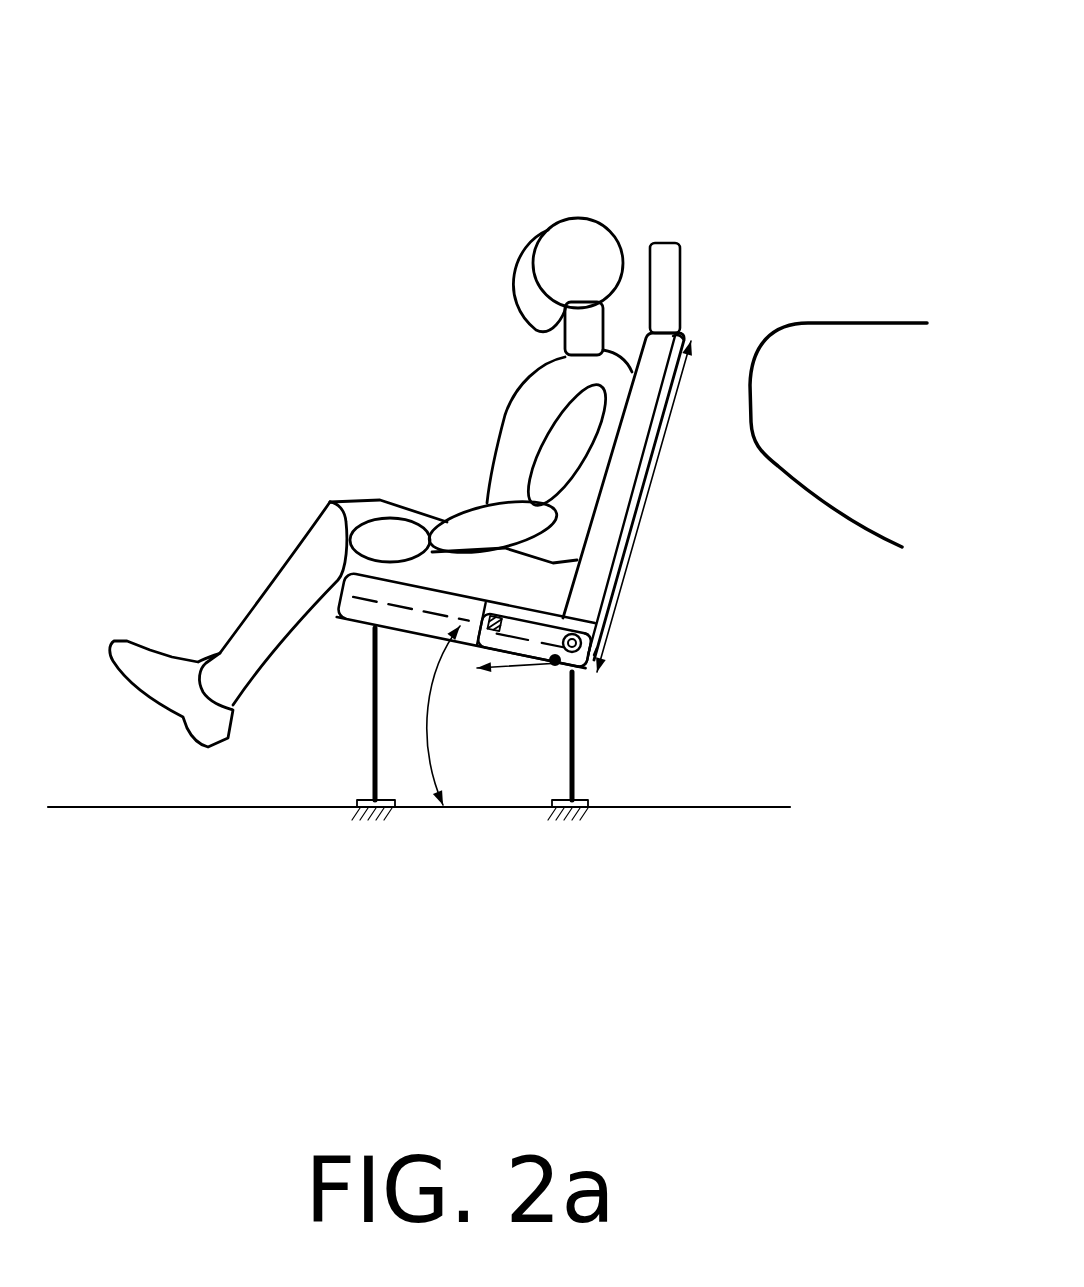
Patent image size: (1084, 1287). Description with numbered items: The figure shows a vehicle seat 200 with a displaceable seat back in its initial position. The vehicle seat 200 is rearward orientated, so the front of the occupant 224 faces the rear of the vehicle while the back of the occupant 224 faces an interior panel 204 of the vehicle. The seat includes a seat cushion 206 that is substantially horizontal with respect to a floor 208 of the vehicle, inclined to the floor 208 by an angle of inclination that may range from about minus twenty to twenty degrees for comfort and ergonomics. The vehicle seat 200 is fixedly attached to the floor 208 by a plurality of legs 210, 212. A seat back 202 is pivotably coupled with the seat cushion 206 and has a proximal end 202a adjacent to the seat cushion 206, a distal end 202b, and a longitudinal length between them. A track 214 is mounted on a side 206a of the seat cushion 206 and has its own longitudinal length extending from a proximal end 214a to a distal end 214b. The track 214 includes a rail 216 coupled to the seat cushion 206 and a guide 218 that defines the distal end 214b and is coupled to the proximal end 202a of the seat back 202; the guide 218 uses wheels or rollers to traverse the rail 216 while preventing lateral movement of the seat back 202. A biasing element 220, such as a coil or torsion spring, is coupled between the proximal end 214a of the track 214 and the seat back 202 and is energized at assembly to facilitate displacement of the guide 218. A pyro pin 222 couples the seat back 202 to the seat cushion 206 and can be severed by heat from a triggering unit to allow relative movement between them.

The vehicle seat 200 is at (552, 66).
The seat back 202 is at (647, 460).
The proximal end 202a is at (599, 642).
The distal end 202b is at (688, 332).
The interior panel 204 is at (852, 322).
The seat cushion 206 is at (320, 507).
The side 206a is at (388, 592).
The floor 208 is at (282, 810).
The leg 210 is at (374, 715).
The leg 212 is at (540, 658).
The track 214 is at (481, 640).
The proximal end 214a is at (481, 614).
The distal end 214b is at (598, 666).
The rail 216 is at (522, 612).
The guide 218 is at (593, 664).
The biasing element 220 is at (496, 608).
The pyro pin 222 is at (572, 680).
The occupant 224 is at (249, 605).